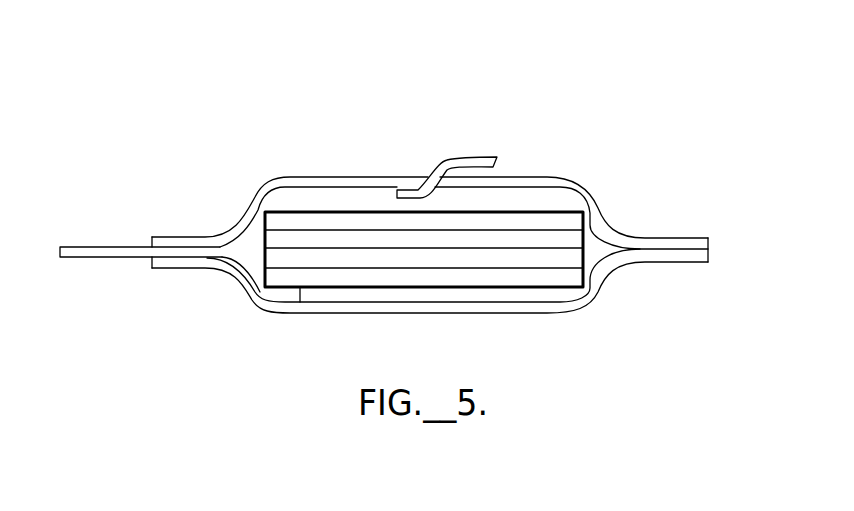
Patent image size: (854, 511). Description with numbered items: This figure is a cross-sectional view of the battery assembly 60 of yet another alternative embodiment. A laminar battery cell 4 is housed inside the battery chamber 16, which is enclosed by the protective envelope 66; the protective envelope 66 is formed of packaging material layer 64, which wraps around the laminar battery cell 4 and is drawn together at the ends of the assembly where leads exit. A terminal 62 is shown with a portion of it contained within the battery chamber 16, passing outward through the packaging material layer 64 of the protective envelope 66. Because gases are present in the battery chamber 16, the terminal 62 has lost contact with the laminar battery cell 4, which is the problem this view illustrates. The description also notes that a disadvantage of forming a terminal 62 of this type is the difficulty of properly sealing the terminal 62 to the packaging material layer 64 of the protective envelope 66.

The battery assembly 60 is at (203, 80).
The packaging material layer 64 is at (312, 182).
The protective envelope 66 is at (236, 197).
The battery chamber 16 is at (347, 197).
The laminar battery cell 4 is at (600, 247).
The terminal 62 is at (480, 157).